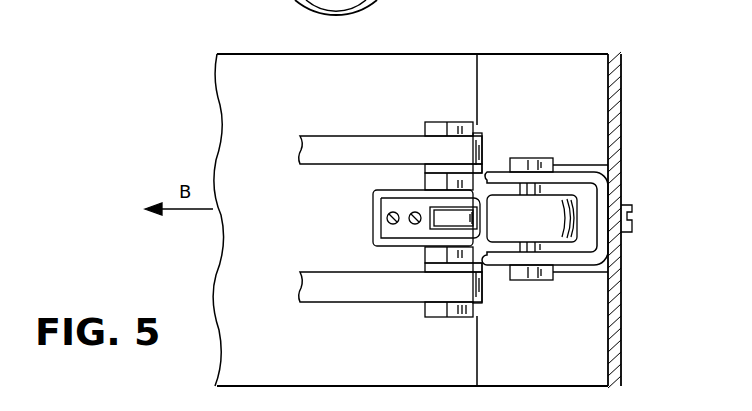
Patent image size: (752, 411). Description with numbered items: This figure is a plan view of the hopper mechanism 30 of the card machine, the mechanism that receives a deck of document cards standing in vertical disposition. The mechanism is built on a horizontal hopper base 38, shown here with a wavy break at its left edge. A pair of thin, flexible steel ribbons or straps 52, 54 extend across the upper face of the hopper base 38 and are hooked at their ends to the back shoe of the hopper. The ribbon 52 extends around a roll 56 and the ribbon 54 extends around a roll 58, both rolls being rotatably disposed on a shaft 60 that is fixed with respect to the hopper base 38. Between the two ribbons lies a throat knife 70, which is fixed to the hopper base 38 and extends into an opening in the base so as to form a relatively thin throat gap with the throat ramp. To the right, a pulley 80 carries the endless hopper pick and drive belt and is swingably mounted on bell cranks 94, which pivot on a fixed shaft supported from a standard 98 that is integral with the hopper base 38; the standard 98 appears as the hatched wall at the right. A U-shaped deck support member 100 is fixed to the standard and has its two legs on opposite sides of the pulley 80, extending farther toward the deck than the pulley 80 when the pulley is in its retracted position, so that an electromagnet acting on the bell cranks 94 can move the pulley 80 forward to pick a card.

The hopper mechanism 30 is at (545, 33).
The hopper base 38 is at (230, 97).
The ribbon 52 is at (330, 135).
The ribbon 54 is at (333, 303).
The roll 56 is at (484, 135).
The roll 58 is at (485, 304).
The shaft 60 is at (470, 310).
The throat knife 70 is at (388, 231).
The pulley 80 is at (532, 230).
The bell cranks 94 is at (558, 157).
The standard 98 is at (622, 322).
The deck support member 100 is at (597, 180).